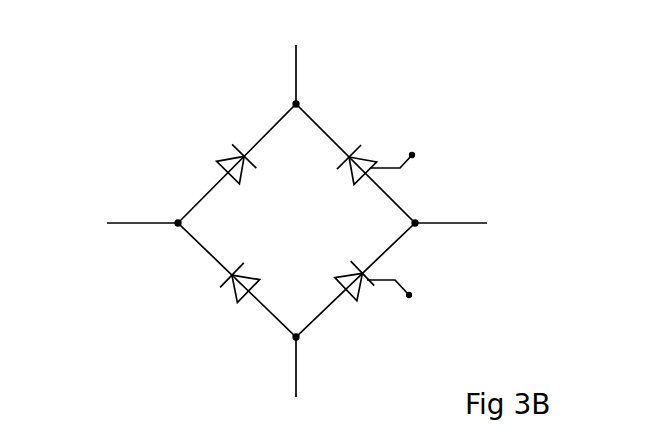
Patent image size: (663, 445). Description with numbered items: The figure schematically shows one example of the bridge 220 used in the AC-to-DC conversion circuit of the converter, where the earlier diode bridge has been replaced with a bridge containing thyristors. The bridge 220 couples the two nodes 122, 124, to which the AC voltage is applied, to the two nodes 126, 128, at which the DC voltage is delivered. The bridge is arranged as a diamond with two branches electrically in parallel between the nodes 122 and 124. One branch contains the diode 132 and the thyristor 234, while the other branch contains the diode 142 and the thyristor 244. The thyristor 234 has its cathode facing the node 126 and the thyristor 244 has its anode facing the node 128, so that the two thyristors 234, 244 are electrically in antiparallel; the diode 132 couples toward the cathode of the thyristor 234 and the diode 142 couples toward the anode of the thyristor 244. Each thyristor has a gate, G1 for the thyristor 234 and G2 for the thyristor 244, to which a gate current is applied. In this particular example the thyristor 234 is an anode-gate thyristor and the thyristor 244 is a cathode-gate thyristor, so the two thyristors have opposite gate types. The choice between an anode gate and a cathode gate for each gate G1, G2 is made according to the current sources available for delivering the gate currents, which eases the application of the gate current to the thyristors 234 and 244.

The bridge 220 is at (147, 69).
The node of application of AC voltage 122 is at (178, 222).
The node of application of AC voltage 124 is at (417, 226).
The node of application of DC voltage 126 is at (295, 104).
The node of application of DC voltage 128 is at (295, 338).
The diode 132 is at (230, 161).
The diode 142 is at (235, 295).
The thyristor 234 is at (362, 158).
The thyristor 244 is at (361, 291).
The gate G1 is at (429, 158).
The gate G2 is at (427, 296).